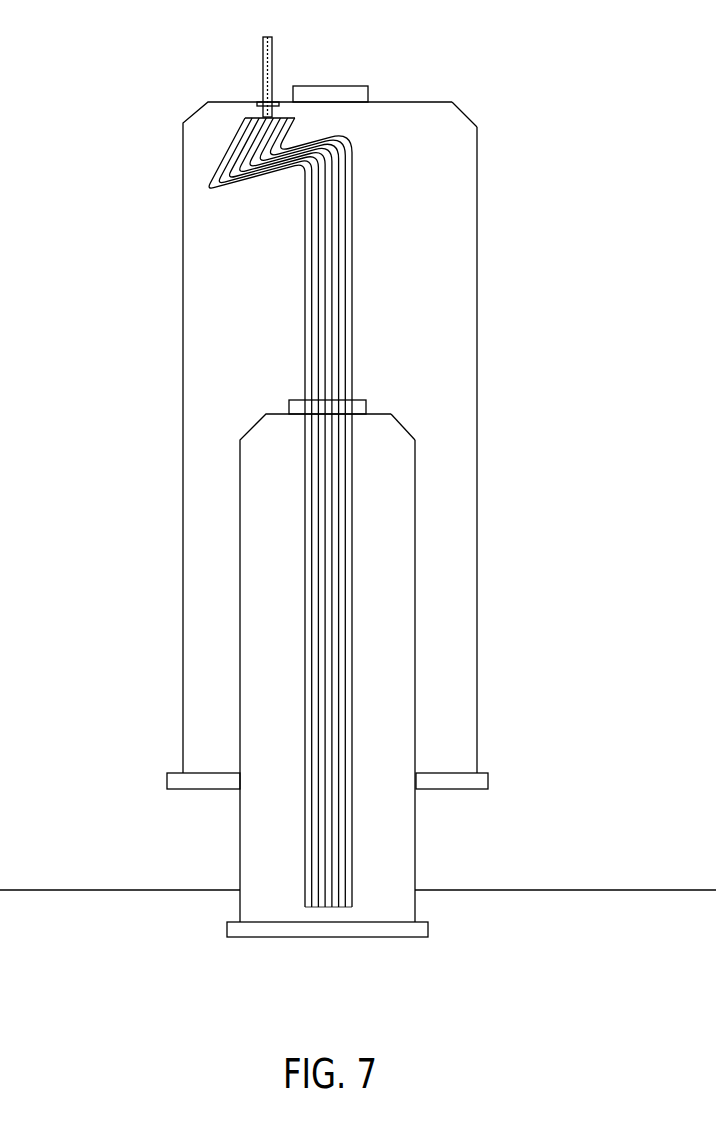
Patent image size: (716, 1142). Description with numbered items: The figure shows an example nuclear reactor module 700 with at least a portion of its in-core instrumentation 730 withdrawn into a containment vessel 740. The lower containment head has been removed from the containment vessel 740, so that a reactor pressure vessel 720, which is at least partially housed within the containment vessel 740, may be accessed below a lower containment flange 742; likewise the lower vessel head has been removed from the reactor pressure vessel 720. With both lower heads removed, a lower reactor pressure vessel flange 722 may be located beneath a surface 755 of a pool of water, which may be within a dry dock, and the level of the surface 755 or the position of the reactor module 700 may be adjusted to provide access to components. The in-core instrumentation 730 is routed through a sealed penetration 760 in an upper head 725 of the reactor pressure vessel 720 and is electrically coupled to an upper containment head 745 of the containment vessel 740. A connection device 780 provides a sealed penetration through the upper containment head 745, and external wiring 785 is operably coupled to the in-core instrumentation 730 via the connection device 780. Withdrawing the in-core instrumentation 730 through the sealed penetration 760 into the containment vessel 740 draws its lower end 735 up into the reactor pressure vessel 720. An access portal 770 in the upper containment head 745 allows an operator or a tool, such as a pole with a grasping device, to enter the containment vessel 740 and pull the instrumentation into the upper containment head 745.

The nuclear reactor module 700 is at (108, 88).
The reactor pressure vessel 720 is at (240, 668).
The lower reactor pressure vessel flange 722 is at (227, 937).
The upper head 725 is at (257, 422).
The in-core instrumentation 730 is at (352, 287).
The lower end 735 is at (352, 905).
The containment vessel 740 is at (183, 473).
The lower containment flange 742 is at (488, 782).
The upper containment head 745 is at (463, 112).
The surface 755 is at (565, 888).
The sealed penetration 760 is at (297, 400).
The access portal 770 is at (367, 92).
The connection device 780 is at (262, 100).
The external wiring 785 is at (263, 55).